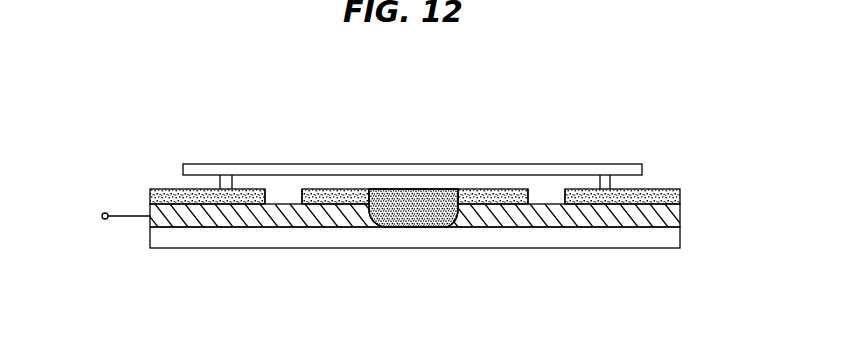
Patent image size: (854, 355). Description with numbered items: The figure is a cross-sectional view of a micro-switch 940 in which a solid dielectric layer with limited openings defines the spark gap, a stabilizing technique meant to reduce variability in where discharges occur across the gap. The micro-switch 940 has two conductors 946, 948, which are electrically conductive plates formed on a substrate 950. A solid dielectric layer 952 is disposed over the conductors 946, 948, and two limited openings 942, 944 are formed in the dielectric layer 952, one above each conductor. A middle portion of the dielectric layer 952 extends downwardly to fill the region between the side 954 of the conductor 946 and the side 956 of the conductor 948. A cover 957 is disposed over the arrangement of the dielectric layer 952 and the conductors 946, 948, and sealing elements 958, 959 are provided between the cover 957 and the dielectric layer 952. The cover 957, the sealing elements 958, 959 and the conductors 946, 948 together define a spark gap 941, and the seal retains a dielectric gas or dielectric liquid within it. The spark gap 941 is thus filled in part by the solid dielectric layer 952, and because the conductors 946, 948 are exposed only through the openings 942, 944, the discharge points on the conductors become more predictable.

The micro-switch 940 is at (654, 123).
The spark gap 941 is at (278, 187).
The opening 942 is at (290, 187).
The opening 944 is at (541, 187).
The conductor 946 is at (150, 226).
The conductor 948 is at (681, 214).
The substrate 950 is at (681, 240).
The dielectric layer 952 is at (681, 190).
The side of conductor 954 is at (383, 227).
The side of conductor 956 is at (447, 227).
The cover 957 is at (643, 167).
The sealing element 958 is at (224, 177).
The sealing element 959 is at (605, 177).